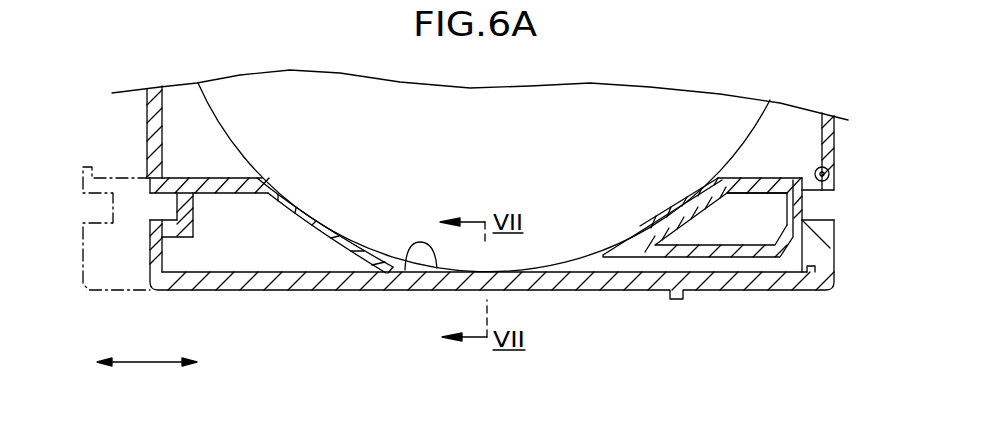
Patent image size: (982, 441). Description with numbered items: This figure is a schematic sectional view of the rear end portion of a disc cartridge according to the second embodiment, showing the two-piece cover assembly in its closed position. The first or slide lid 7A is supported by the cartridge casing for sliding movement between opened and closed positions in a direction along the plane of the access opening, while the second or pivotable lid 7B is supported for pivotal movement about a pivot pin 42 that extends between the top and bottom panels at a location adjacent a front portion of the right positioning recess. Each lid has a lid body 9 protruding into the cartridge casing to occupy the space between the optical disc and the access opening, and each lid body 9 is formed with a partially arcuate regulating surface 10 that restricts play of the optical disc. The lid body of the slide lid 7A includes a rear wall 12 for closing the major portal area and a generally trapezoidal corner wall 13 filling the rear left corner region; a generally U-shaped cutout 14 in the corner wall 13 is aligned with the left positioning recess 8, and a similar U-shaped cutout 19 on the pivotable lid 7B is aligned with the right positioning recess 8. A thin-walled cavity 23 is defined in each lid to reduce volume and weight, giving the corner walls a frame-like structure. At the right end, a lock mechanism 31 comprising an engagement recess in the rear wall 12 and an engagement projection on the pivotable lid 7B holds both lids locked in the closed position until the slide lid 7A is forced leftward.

The slide lid 7A is at (320, 297).
The pivotable lid 7B is at (675, 196).
The positioning recess 8 is at (158, 207).
The lid body 9 is at (283, 193).
The regulating surface 10 is at (422, 262).
The rear wall 12 is at (550, 280).
The corner wall 13 is at (340, 228).
The U-shaped cutout 14 is at (158, 213).
The U-shaped cutout 19 is at (828, 213).
The thin-walled cavity 23 is at (252, 217).
The lock mechanism 31 is at (804, 289).
The pivot pin 42 is at (830, 177).